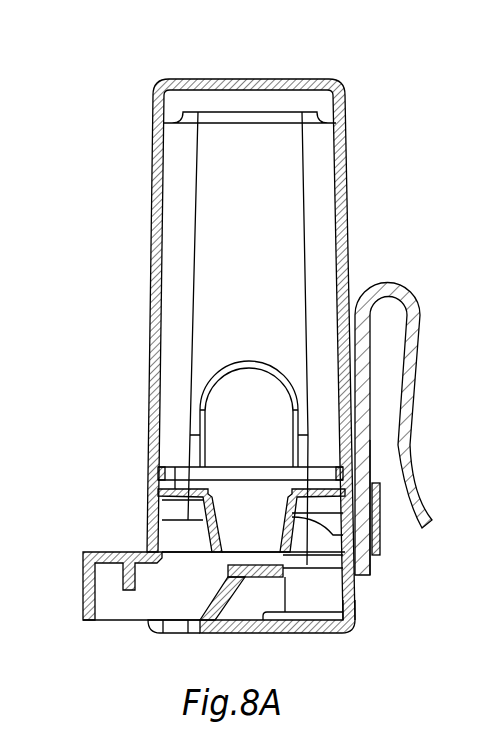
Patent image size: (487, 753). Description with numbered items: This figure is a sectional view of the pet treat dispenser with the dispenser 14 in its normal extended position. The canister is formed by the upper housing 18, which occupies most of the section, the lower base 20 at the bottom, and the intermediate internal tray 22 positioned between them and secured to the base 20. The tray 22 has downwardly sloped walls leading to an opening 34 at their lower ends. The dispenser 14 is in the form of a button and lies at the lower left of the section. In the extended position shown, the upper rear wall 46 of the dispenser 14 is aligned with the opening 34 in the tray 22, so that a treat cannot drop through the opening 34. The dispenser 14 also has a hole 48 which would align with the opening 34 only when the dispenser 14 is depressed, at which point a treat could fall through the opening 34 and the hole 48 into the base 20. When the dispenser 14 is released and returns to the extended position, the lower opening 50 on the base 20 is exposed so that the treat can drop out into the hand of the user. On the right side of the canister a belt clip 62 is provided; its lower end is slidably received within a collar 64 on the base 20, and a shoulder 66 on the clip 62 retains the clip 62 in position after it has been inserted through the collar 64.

The upper housing 18 is at (303, 79).
The belt clip 62 is at (405, 292).
The shoulder 66 is at (378, 478).
The collar 64 is at (380, 541).
The lower base 20 is at (353, 612).
The tray 22 is at (175, 482).
The opening 34 is at (242, 509).
The hole 48 is at (188, 553).
The dispenser 14 is at (83, 562).
The lower opening 50 is at (112, 622).
The upper rear wall 46 is at (275, 568).